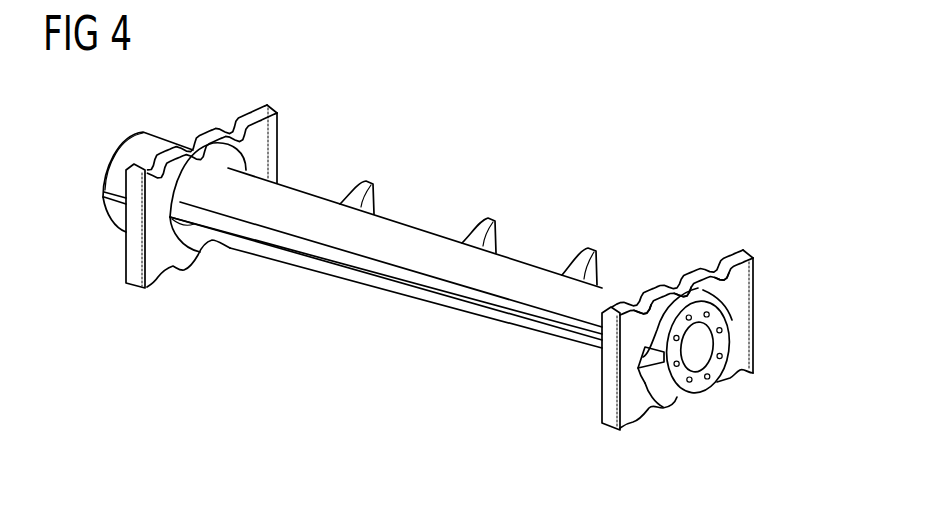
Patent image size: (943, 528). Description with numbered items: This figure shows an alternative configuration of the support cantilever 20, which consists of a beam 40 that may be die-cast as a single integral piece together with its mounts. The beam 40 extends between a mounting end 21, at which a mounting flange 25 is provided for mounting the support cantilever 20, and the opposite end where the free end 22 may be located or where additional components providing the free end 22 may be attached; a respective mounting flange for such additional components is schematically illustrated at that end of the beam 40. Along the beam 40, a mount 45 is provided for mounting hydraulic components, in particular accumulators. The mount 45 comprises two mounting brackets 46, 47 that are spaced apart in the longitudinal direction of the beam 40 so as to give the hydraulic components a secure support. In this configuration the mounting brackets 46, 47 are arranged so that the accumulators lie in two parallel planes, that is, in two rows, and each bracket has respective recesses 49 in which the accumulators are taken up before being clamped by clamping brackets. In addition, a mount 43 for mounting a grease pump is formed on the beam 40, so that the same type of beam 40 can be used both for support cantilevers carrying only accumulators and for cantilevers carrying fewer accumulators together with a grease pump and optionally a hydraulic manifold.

The support cantilever 20 is at (547, 157).
The mounting end 21 is at (107, 180).
The free end 22 is at (688, 393).
The mounting flange 25 is at (117, 148).
The beam 40 is at (352, 283).
The mount for mounting a grease pump 43 is at (364, 179).
The mount 45 is at (284, 96).
The mounting bracket 46 is at (135, 278).
The mounting bracket 47 is at (609, 426).
The recess 49 is at (638, 298).